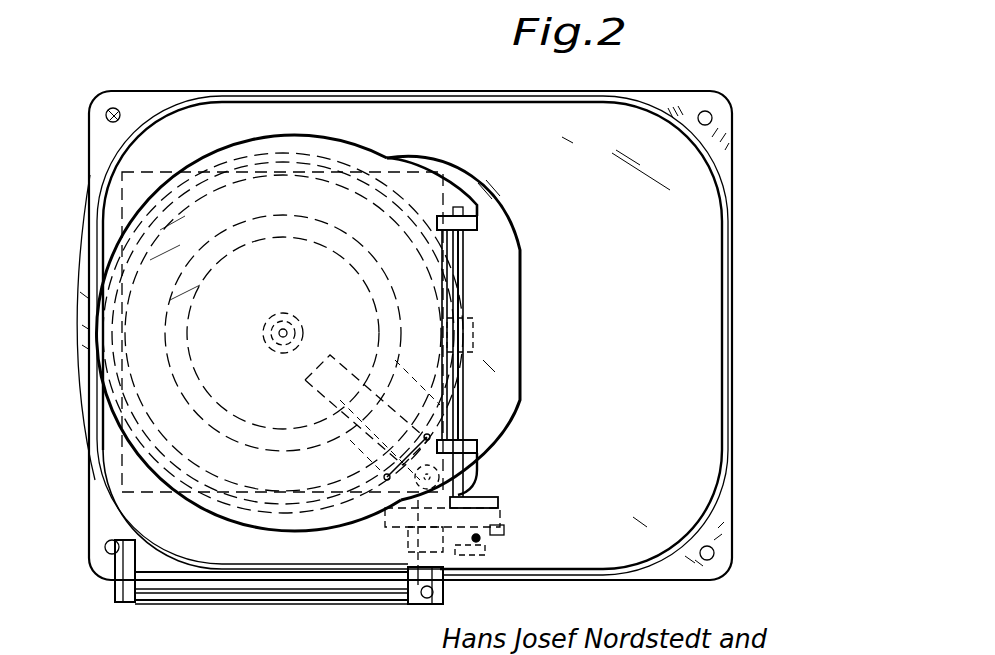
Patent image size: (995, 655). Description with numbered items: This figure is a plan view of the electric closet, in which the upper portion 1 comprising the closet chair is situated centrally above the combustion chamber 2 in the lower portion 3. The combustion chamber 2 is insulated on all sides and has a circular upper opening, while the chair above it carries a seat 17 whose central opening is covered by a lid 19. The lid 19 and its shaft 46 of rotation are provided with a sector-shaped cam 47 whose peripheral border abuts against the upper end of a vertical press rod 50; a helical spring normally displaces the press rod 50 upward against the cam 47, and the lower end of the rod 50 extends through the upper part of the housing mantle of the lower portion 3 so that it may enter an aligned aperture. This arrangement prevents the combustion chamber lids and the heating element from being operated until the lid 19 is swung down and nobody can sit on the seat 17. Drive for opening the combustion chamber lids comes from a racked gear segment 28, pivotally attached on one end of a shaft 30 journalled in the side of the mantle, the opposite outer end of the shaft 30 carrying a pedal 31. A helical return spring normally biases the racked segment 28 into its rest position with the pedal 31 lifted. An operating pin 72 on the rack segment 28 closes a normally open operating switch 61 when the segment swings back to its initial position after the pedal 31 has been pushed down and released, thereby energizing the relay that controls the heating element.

The upper portion 1 is at (412, 150).
The combustion chamber 2 is at (98, 88).
The lower portion 3 is at (657, 110).
The seat 17 is at (85, 290).
The lid 19 is at (197, 160).
The racked gear segment 28 is at (500, 510).
The shaft 30 is at (452, 582).
The pedal 31 is at (143, 602).
The shaft of rotation 46 is at (463, 293).
The sector-shaped cam 47 is at (497, 497).
The press rod 50 is at (498, 473).
The operating switch 61 is at (490, 557).
The operating pin 72 is at (495, 532).